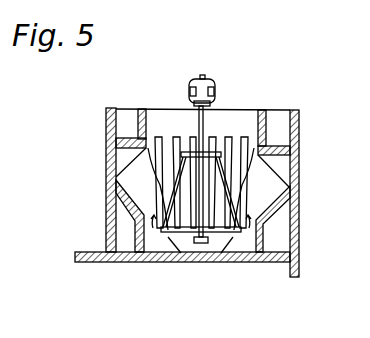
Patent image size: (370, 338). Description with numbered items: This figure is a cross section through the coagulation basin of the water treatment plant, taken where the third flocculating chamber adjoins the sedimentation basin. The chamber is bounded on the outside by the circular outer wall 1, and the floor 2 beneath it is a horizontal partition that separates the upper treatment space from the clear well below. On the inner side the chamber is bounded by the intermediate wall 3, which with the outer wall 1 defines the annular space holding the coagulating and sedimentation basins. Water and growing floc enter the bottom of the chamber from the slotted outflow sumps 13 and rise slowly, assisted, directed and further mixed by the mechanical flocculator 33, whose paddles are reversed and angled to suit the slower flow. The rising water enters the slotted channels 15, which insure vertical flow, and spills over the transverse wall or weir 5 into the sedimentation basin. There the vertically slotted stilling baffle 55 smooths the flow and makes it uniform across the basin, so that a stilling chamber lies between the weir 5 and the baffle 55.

The outer wall 1 is at (299, 173).
The floor 2 is at (195, 263).
The intermediate wall 3 is at (108, 179).
The transverse wall or weir 5 is at (137, 170).
The outflow sumps 13 is at (276, 245).
The slotted channels 15 is at (280, 122).
The mechanical flocculator 33 is at (220, 187).
The stilling baffle 55 is at (155, 118).